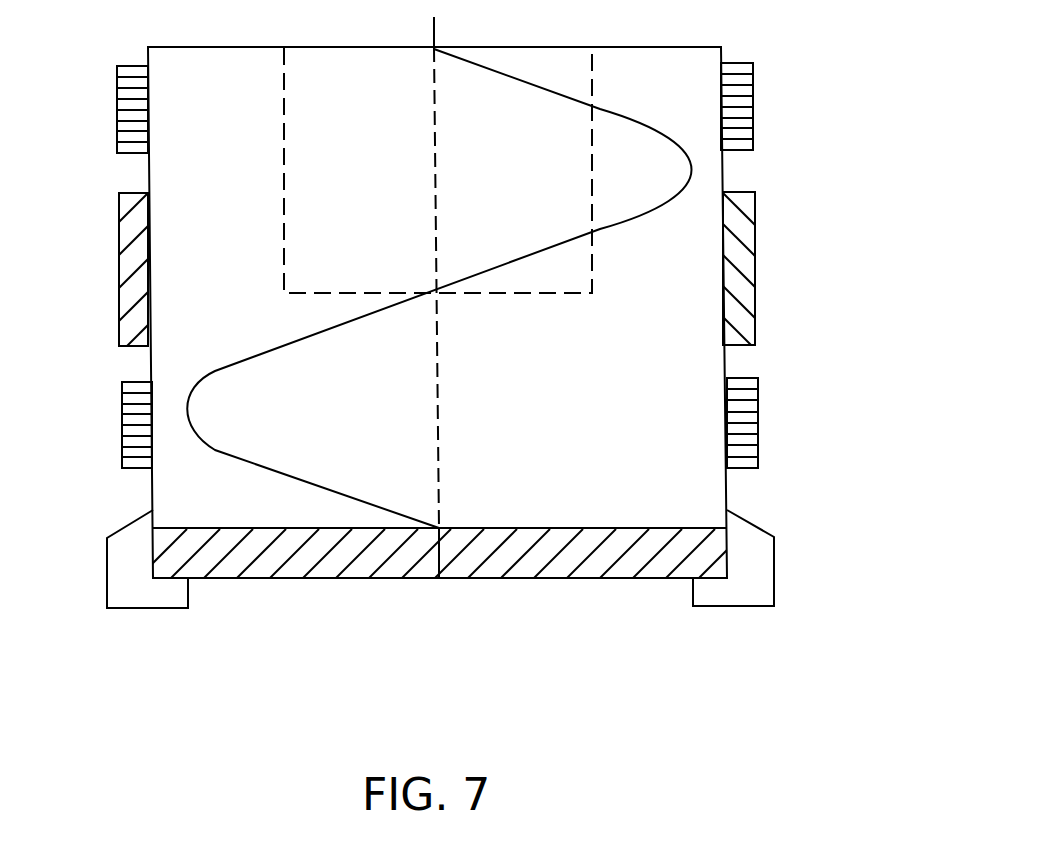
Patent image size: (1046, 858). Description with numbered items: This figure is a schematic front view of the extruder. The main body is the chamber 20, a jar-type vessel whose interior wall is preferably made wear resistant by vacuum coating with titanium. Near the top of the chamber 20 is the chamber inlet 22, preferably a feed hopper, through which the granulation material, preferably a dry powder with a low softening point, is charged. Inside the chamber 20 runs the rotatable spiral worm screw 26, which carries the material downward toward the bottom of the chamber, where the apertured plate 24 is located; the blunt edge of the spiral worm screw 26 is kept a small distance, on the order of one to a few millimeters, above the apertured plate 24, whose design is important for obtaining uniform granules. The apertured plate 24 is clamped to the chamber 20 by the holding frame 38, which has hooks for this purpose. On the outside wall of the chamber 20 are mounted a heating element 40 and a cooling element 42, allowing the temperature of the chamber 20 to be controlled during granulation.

The chamber 20 is at (155, 492).
The chamber inlet 22 is at (592, 273).
The apertured plate 24 is at (660, 535).
The spiral worm screw 26 is at (683, 182).
The holding frame 38 is at (772, 575).
The heating element 40 is at (120, 125).
The cooling element 42 is at (132, 317).